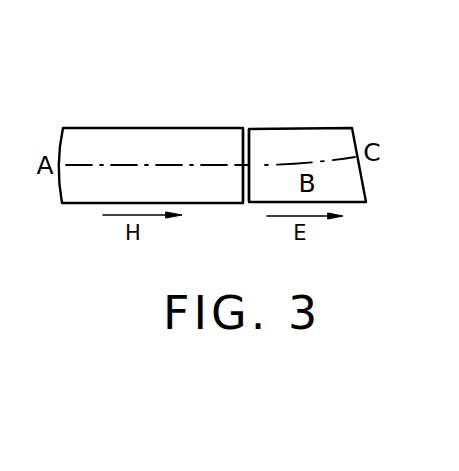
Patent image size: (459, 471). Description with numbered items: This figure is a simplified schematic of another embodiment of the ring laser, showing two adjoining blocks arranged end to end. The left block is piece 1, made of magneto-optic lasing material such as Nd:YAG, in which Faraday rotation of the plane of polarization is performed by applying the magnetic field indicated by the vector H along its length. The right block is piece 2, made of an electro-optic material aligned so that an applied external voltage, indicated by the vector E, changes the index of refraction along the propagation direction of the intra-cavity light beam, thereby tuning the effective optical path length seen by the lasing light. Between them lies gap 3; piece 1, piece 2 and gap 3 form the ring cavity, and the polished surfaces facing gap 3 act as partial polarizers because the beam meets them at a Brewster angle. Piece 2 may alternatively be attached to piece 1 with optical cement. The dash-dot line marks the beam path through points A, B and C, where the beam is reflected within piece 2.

The piece 1 is at (165, 128).
The piece 2 is at (322, 128).
The gap 3 is at (245, 125).